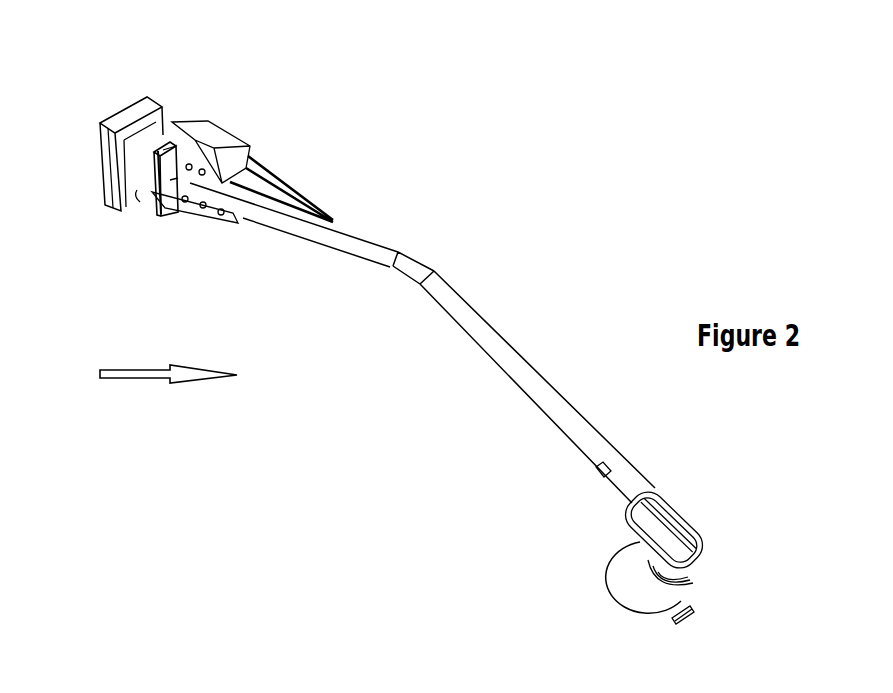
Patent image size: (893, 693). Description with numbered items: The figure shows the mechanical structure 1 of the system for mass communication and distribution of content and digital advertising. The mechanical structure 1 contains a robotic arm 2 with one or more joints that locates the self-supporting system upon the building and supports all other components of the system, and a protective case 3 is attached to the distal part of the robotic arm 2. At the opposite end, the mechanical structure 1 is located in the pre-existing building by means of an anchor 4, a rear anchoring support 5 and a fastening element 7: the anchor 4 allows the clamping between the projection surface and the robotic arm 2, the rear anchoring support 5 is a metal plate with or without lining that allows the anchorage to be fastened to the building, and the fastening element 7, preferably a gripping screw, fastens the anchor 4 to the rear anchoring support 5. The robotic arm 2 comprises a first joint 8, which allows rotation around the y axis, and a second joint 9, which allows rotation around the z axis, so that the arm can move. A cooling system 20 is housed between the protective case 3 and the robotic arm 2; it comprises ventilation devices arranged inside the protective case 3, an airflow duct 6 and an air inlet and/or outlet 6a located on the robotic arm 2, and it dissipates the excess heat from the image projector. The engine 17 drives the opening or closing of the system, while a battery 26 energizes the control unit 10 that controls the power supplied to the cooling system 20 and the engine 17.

The mechanical structure 1 is at (159, 374).
The robotic arm 2 is at (442, 293).
The protective case 3 is at (627, 582).
The anchor 4 is at (150, 130).
The rear anchoring support 5 is at (105, 190).
The airflow duct 6 is at (697, 612).
The air inlet and/or outlet 6a is at (600, 469).
The fastening element 7 is at (163, 108).
The first joint 8 is at (170, 195).
The second joint 9 is at (417, 260).
The control unit 10 is at (98, 160).
The engine 17 is at (223, 142).
The cooling system 20 is at (693, 610).
The battery 26 is at (150, 180).